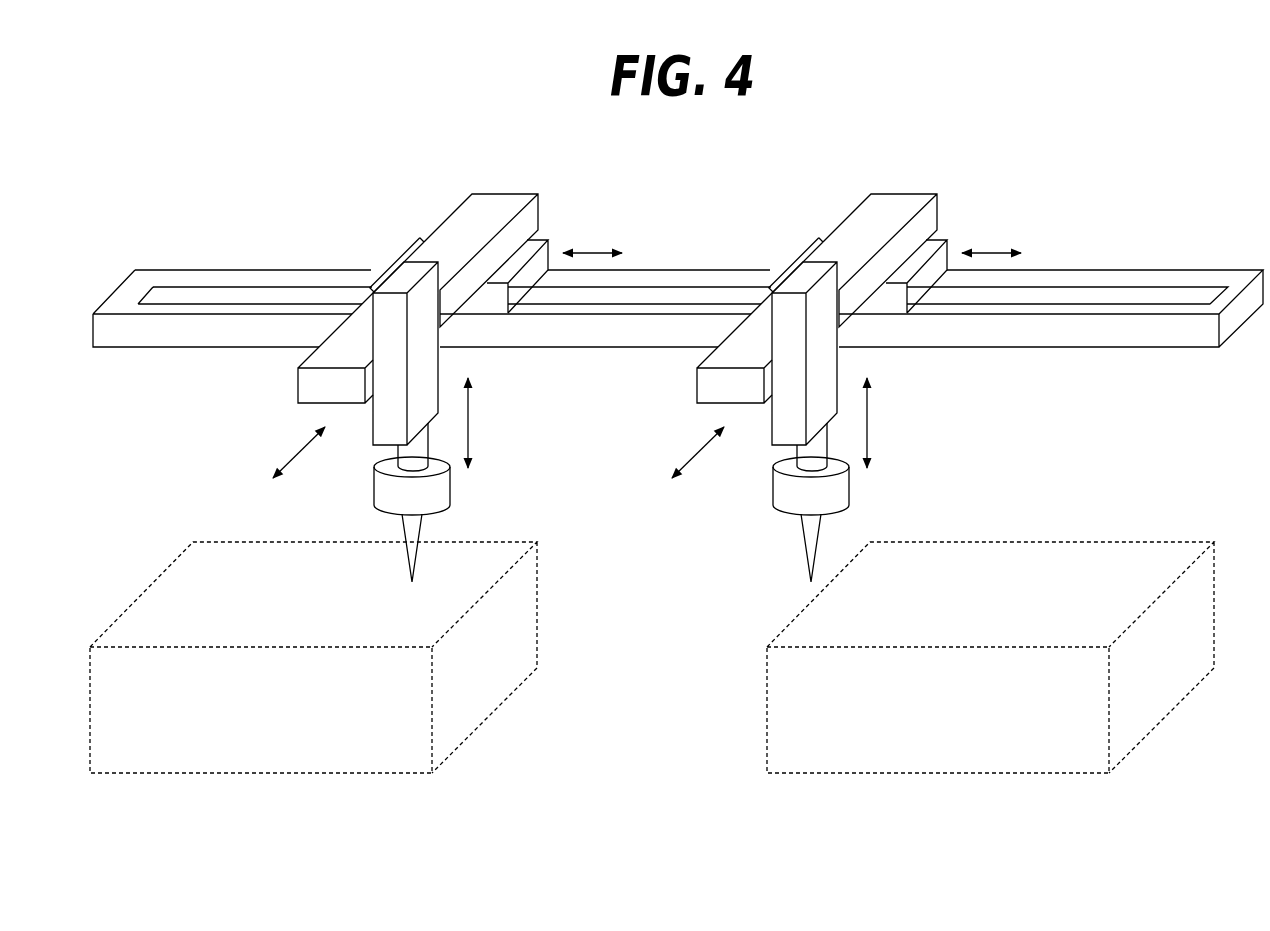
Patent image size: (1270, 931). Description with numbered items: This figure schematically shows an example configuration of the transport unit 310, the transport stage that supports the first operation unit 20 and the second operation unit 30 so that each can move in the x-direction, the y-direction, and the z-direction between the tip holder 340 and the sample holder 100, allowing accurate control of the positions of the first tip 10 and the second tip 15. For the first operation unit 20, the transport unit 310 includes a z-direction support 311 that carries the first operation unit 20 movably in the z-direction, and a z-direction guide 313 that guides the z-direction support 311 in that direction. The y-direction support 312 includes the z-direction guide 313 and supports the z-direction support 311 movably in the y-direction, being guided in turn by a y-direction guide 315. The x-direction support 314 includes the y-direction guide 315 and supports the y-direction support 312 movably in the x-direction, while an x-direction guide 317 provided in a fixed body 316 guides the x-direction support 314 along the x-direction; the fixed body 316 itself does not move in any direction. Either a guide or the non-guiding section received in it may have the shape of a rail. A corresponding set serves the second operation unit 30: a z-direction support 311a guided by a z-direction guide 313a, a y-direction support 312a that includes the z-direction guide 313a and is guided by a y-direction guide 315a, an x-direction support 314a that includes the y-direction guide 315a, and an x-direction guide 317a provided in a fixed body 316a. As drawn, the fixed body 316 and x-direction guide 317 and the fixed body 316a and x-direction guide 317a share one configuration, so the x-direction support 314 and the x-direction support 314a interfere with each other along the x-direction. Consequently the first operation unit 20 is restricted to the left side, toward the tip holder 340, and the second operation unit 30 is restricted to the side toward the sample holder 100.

The transport unit 310 is at (670, 299).
The z-direction support 311 is at (367, 435).
The z-direction support 311a is at (772, 431).
The y-direction support 312 is at (497, 190).
The y-direction support 312a is at (883, 225).
The z-direction guide 313 is at (376, 377).
The z-direction guide 313a is at (712, 385).
The x-direction support 314 is at (546, 234).
The x-direction support 314a is at (950, 243).
The y-direction guide 315 is at (417, 251).
The y-direction guide 315a is at (784, 233).
The fixed body 316 is at (678, 260).
The fixed body 316a is at (196, 267).
The x-direction guide 317 is at (653, 341).
The x-direction guide 317a is at (207, 297).
The first operation unit 20 is at (441, 492).
The second operation unit 30 is at (828, 528).
The first tip 10 is at (407, 553).
The second tip 15 is at (783, 557).
The tip holder 340 is at (479, 689).
The sample holder 100 is at (1149, 689).